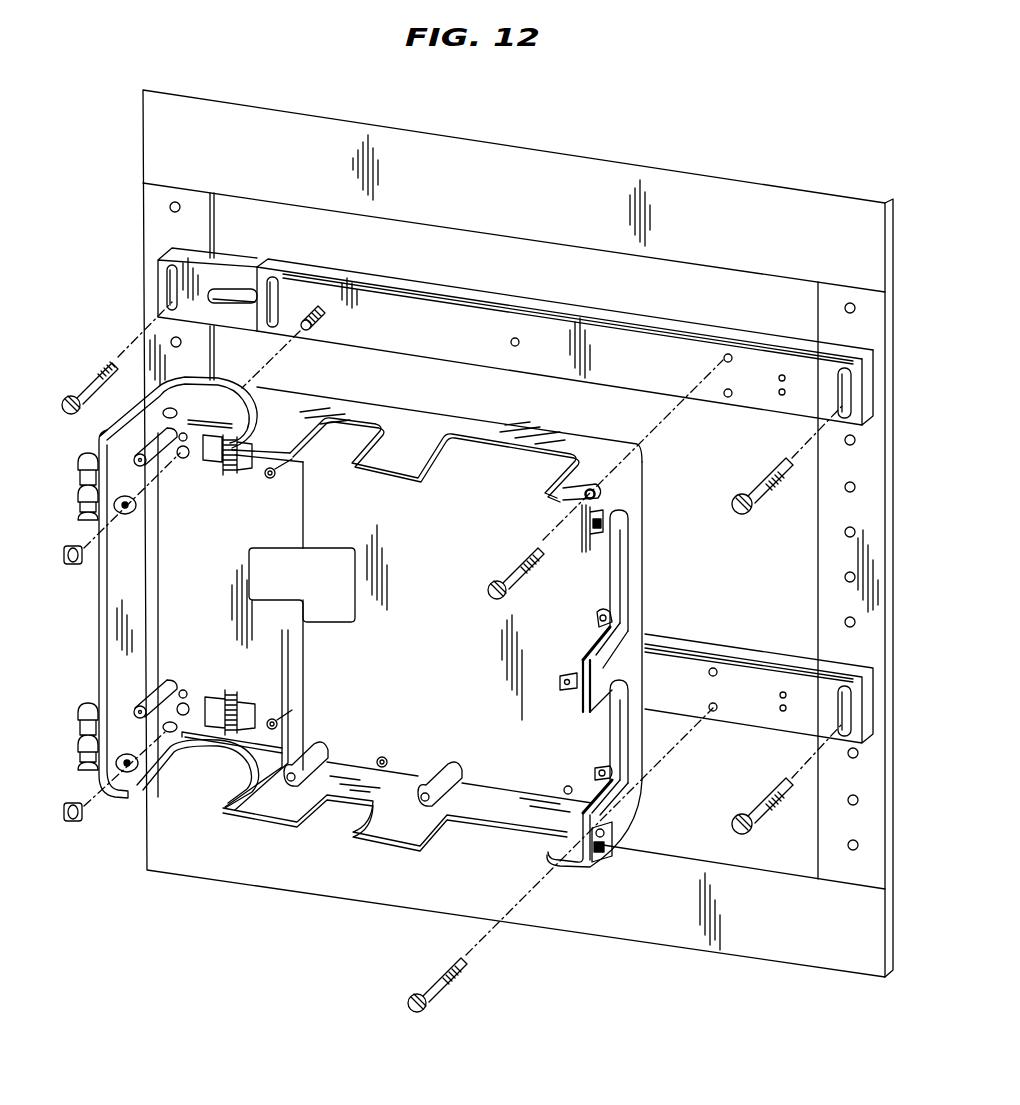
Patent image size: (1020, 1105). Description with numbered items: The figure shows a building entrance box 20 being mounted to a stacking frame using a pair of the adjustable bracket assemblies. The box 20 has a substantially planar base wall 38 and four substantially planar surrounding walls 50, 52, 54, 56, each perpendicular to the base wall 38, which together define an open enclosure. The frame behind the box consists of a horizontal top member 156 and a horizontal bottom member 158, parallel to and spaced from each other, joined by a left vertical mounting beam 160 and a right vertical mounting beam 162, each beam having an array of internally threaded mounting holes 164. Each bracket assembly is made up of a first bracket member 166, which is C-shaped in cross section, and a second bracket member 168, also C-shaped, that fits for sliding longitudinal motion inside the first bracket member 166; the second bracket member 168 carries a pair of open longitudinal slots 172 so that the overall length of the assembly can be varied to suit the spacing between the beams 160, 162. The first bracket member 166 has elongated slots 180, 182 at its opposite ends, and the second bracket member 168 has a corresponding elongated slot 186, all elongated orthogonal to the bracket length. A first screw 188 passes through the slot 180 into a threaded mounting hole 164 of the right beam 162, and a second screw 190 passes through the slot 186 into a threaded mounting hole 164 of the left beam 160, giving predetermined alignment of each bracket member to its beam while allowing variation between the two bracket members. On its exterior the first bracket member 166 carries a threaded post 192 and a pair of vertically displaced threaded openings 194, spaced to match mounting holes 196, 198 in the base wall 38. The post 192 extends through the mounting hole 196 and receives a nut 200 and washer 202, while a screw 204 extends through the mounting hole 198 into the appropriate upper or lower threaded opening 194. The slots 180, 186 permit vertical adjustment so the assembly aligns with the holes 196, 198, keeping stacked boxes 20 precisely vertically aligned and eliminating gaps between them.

The building entrance box 20 is at (93, 660).
The base wall 38 is at (458, 678).
The surrounding wall 50 is at (393, 463).
The surrounding wall 52 is at (622, 658).
The surrounding wall 54 is at (391, 835).
The surrounding wall 56 is at (98, 693).
The horizontal top member 156 is at (866, 214).
The horizontal bottom member 158 is at (865, 966).
The left vertical mounting beam 160 is at (148, 230).
The right vertical mounting beam 162 is at (885, 518).
The mounting holes 164 is at (180, 210).
The first bracket member 166 is at (608, 340).
The second bracket member 168 is at (213, 287).
The open longitudinal slots 172 is at (232, 300).
The elongated slot 180 is at (838, 382).
The elongated slot 182 is at (280, 296).
The elongated slot 186 is at (167, 297).
The first screw 188 is at (752, 488).
The second screw 190 is at (85, 387).
The threaded post 192 is at (325, 318).
The threaded openings 194 is at (724, 392).
The mounting hole 196 is at (187, 458).
The mounting hole 198 is at (600, 493).
The nut 200 is at (82, 560).
The washer 202 is at (136, 512).
The screw 204 is at (505, 572).